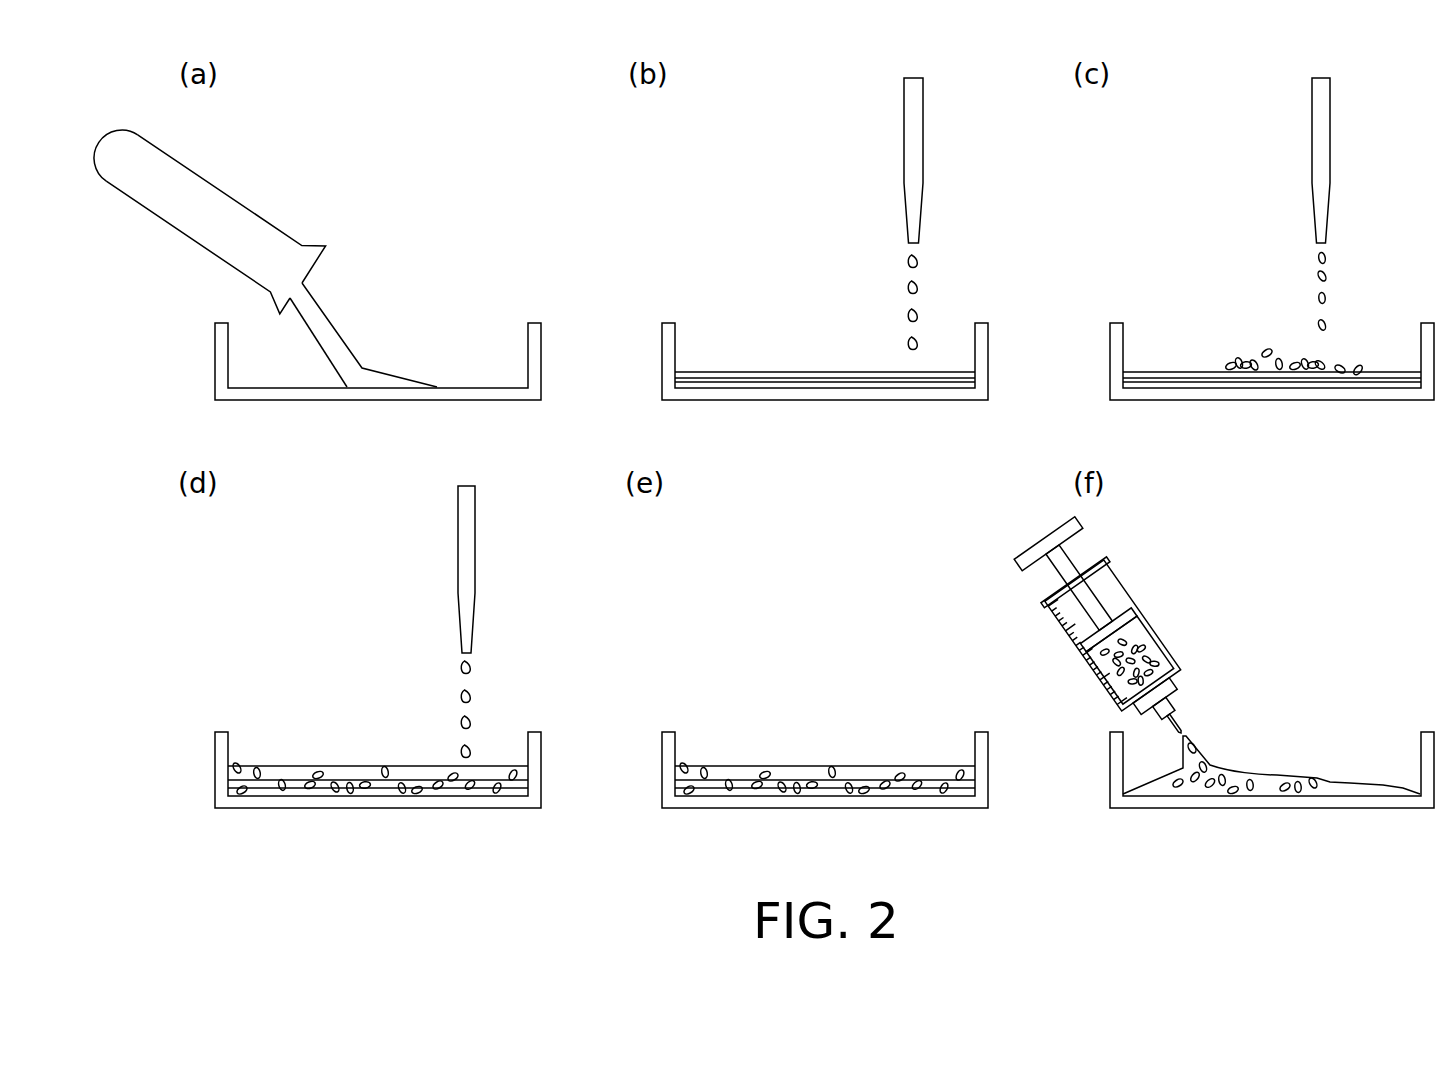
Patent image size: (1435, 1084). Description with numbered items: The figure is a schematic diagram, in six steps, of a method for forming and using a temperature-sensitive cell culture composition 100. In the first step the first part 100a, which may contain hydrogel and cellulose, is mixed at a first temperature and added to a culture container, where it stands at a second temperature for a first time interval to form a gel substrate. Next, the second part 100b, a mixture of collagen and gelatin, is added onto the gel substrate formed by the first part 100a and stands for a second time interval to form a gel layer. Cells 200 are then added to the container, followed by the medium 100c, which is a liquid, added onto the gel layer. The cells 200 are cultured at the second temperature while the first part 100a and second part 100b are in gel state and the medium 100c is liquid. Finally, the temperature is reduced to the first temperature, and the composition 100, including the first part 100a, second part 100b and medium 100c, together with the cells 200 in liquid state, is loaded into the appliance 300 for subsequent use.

The first part 100a is at (322, 327).
The second part 100b is at (908, 287).
The medium 100c is at (468, 695).
The cells 200 is at (1327, 325).
The appliance 300 is at (1107, 583).
The temperature-sensitive cell culture composition 100 is at (1345, 788).